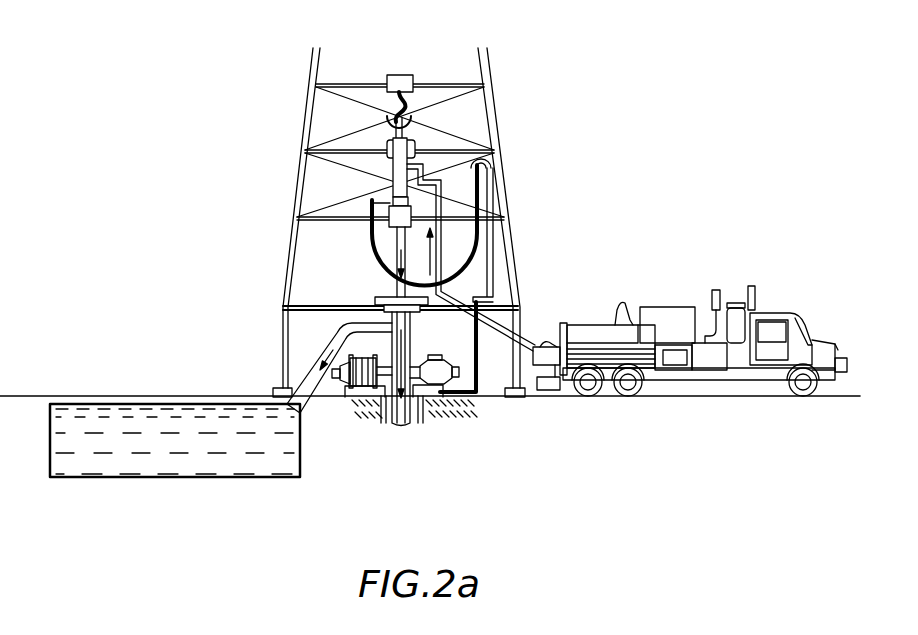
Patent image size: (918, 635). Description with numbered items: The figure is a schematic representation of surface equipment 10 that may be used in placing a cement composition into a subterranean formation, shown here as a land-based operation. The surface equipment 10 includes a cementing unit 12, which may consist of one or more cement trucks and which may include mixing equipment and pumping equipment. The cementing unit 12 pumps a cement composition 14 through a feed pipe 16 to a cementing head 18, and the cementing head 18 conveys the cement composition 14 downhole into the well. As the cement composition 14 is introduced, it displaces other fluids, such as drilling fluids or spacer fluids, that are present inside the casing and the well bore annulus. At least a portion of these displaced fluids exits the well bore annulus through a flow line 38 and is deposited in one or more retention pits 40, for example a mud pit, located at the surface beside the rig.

The surface equipment 10 is at (722, 82).
The cementing unit 12 is at (740, 385).
The cement composition 14 is at (397, 250).
The feed pipe 16 is at (492, 323).
The cementing head 18 is at (432, 140).
The flow line 38 is at (323, 394).
The retention pit 40 is at (100, 478).